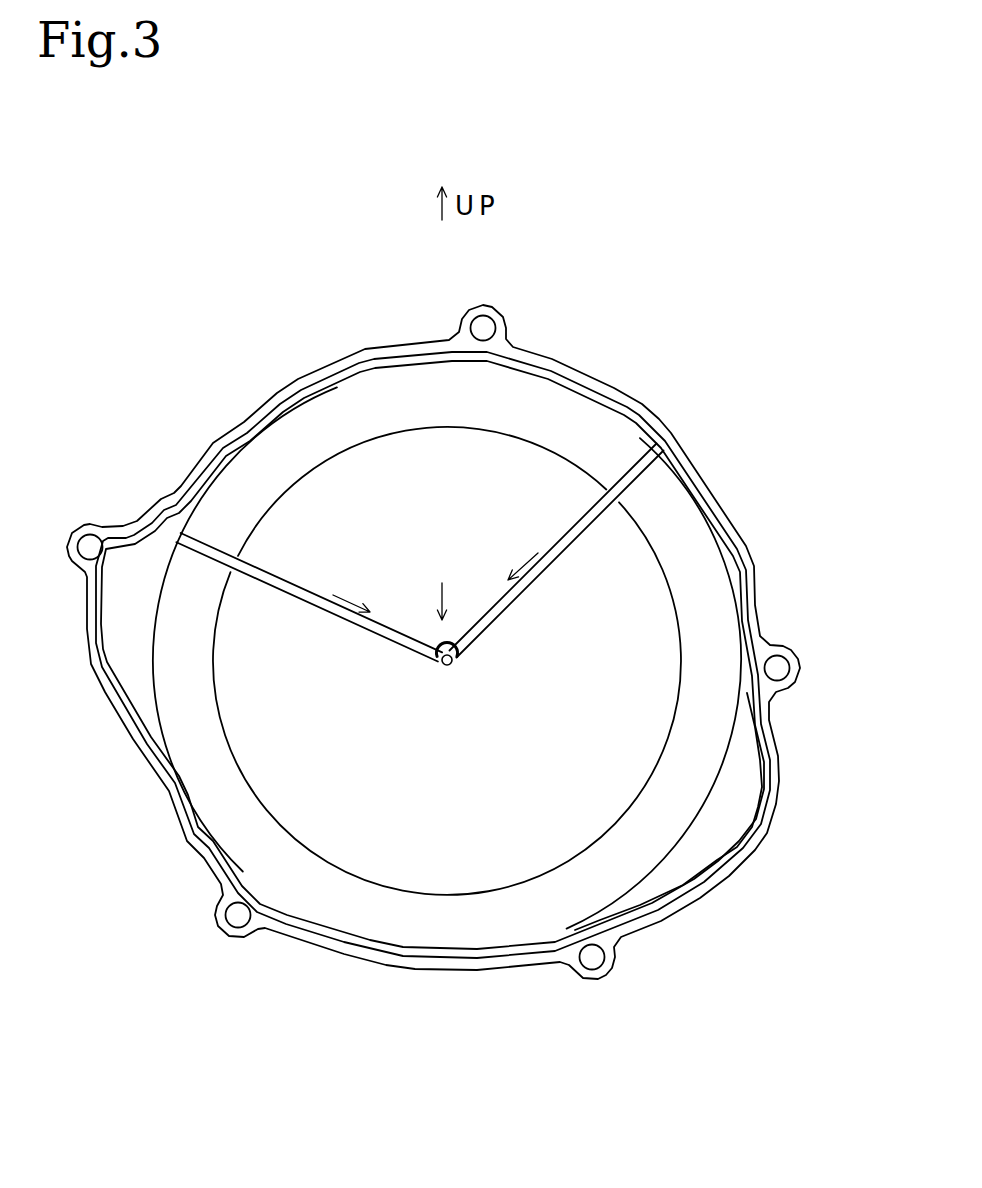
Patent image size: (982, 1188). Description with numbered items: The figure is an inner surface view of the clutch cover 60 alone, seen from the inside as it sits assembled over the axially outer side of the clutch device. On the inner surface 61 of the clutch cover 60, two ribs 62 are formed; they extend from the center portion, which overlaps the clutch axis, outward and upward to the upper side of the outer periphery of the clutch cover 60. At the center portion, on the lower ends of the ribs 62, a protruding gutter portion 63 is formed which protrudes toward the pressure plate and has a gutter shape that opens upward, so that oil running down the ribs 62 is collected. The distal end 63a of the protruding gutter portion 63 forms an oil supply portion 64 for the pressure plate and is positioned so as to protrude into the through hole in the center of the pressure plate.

The clutch cover 60 is at (670, 297).
The inner surface 61 is at (452, 531).
The ribs 62 is at (577, 537).
The protruding gutter portion 63 is at (651, 624).
The distal end 63a is at (457, 662).
The oil supply portion 64 is at (457, 662).